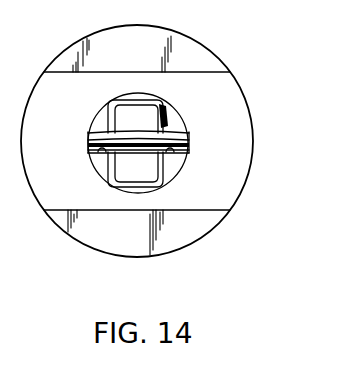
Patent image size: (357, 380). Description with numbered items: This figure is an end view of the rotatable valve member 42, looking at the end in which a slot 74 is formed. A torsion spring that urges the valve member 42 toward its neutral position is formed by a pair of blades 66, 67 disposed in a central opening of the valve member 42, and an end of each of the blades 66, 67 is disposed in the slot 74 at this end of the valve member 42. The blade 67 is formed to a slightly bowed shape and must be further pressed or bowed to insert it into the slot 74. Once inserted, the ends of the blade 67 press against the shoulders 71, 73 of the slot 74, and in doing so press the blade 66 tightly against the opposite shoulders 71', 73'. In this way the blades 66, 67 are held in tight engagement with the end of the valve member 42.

The valve member 42 is at (232, 45).
The blade 66 is at (163, 181).
The blade 67 is at (93, 121).
The shoulder 71 is at (127, 117).
The shoulder 71' is at (125, 176).
The shoulder 73 is at (193, 111).
The shoulder 73' is at (230, 199).
The slot 74 is at (157, 128).